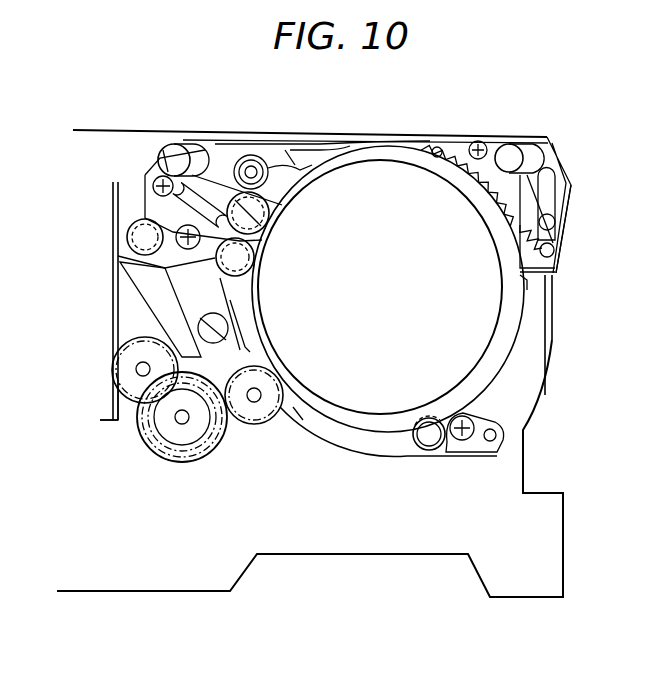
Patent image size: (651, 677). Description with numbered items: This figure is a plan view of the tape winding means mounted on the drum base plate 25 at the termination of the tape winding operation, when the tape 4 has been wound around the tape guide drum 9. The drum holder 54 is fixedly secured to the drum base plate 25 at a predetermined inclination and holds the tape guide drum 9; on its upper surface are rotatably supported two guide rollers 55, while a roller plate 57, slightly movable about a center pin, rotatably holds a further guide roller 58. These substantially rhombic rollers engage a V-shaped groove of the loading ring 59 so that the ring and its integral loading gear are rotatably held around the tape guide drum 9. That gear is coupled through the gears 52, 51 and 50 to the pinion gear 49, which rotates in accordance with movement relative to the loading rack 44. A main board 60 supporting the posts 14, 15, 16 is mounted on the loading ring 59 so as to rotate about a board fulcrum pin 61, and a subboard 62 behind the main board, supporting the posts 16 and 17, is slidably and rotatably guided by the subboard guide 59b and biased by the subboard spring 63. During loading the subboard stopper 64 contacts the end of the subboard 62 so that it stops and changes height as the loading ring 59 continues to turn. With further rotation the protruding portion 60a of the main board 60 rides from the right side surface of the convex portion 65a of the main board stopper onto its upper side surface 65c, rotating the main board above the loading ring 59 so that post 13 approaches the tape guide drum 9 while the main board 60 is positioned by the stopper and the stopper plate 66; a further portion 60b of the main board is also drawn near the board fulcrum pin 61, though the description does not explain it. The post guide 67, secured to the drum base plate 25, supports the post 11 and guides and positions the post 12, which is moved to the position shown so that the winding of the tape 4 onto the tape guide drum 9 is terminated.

The tape 4 is at (120, 236).
The tape guide drum 9 is at (358, 177).
The post 11 is at (127, 243).
The post 12 is at (218, 278).
The post 13 is at (145, 175).
The post 14 is at (183, 228).
The post 15 is at (173, 153).
The post 16 is at (537, 158).
The post 17 is at (548, 190).
The drum base plate 25 is at (203, 593).
The loading rack 44 is at (115, 408).
The pinion gear 49 is at (113, 368).
The gear 50 is at (150, 427).
The gear 51 is at (158, 452).
The gear 52 is at (262, 426).
The drum holder 54 is at (556, 300).
The guide rollers 55 is at (207, 326).
The roller plate 57 is at (480, 418).
The guide roller 58 is at (410, 442).
The loading ring 59 is at (394, 146).
The subboard guide 59b is at (450, 145).
The main board 60 is at (193, 147).
The protruding portion 60a is at (275, 168).
The pulley 60b is at (249, 170).
The board fulcrum pin 61 is at (217, 153).
The subboard 62 is at (572, 207).
The subboard spring 63 is at (556, 241).
The subboard stopper 64 is at (505, 150).
The convex portion 65a is at (307, 160).
The upper side surface 65c is at (292, 158).
The stopper plate 66 is at (172, 198).
The post guide 67 is at (172, 312).